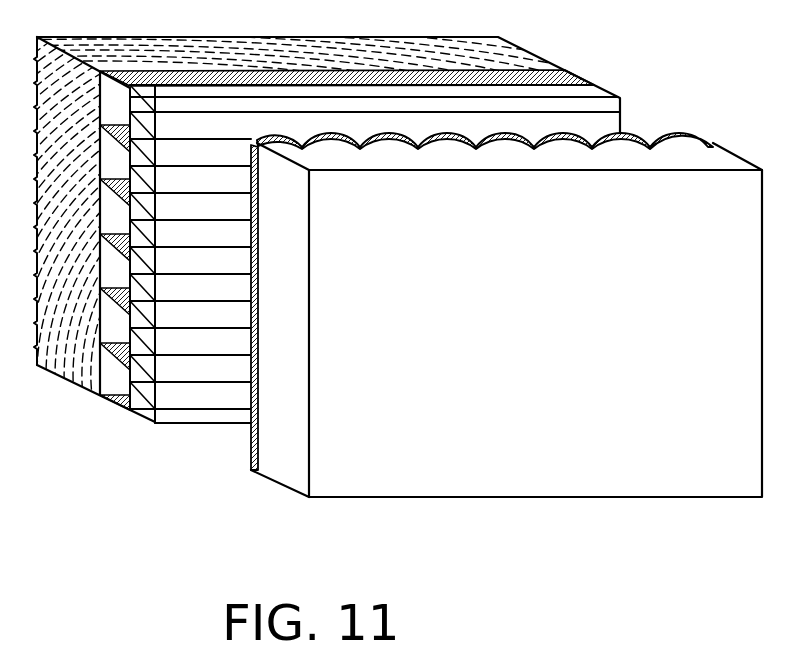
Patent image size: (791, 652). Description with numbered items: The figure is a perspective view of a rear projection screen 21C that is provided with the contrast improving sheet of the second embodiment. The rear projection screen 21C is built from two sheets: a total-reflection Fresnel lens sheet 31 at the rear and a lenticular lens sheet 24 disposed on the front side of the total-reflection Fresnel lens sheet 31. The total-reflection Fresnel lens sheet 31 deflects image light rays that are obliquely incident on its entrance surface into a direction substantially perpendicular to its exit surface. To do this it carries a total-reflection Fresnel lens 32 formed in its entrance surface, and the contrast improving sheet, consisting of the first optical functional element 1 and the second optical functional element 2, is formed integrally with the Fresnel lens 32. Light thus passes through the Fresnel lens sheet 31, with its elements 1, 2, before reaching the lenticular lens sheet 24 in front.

The rear projection screen 21C is at (765, 48).
The total-reflection Fresnel lens sheet 31 is at (346, 268).
The total-reflection Fresnel lens 32 is at (24, 328).
The first optical functional element 1 is at (117, 405).
The second optical functional element 2 is at (349, 277).
The lenticular lens sheet 24 is at (278, 472).